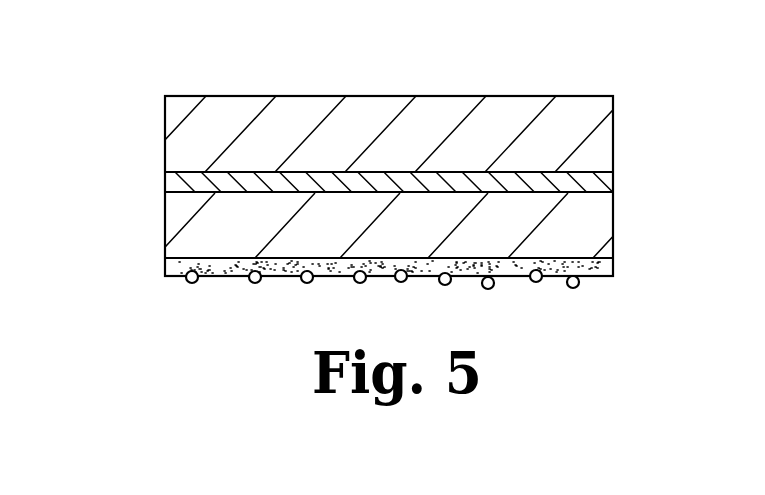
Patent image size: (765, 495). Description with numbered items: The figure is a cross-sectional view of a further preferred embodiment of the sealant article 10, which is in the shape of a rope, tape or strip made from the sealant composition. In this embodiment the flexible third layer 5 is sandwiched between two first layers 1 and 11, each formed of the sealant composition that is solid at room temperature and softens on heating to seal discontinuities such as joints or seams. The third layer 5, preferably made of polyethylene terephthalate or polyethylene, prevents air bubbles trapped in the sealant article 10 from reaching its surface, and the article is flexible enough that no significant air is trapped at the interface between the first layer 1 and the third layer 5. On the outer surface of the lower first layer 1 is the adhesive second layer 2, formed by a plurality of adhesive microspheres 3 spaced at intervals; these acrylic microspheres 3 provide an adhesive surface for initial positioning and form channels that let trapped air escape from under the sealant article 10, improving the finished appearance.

The sealant article 10 is at (131, 107).
The first layer 11 is at (590, 153).
The third layer 5 is at (595, 186).
The first layer 1 is at (583, 243).
The second layer 2 is at (597, 272).
The adhesive microspheres 3 is at (490, 290).